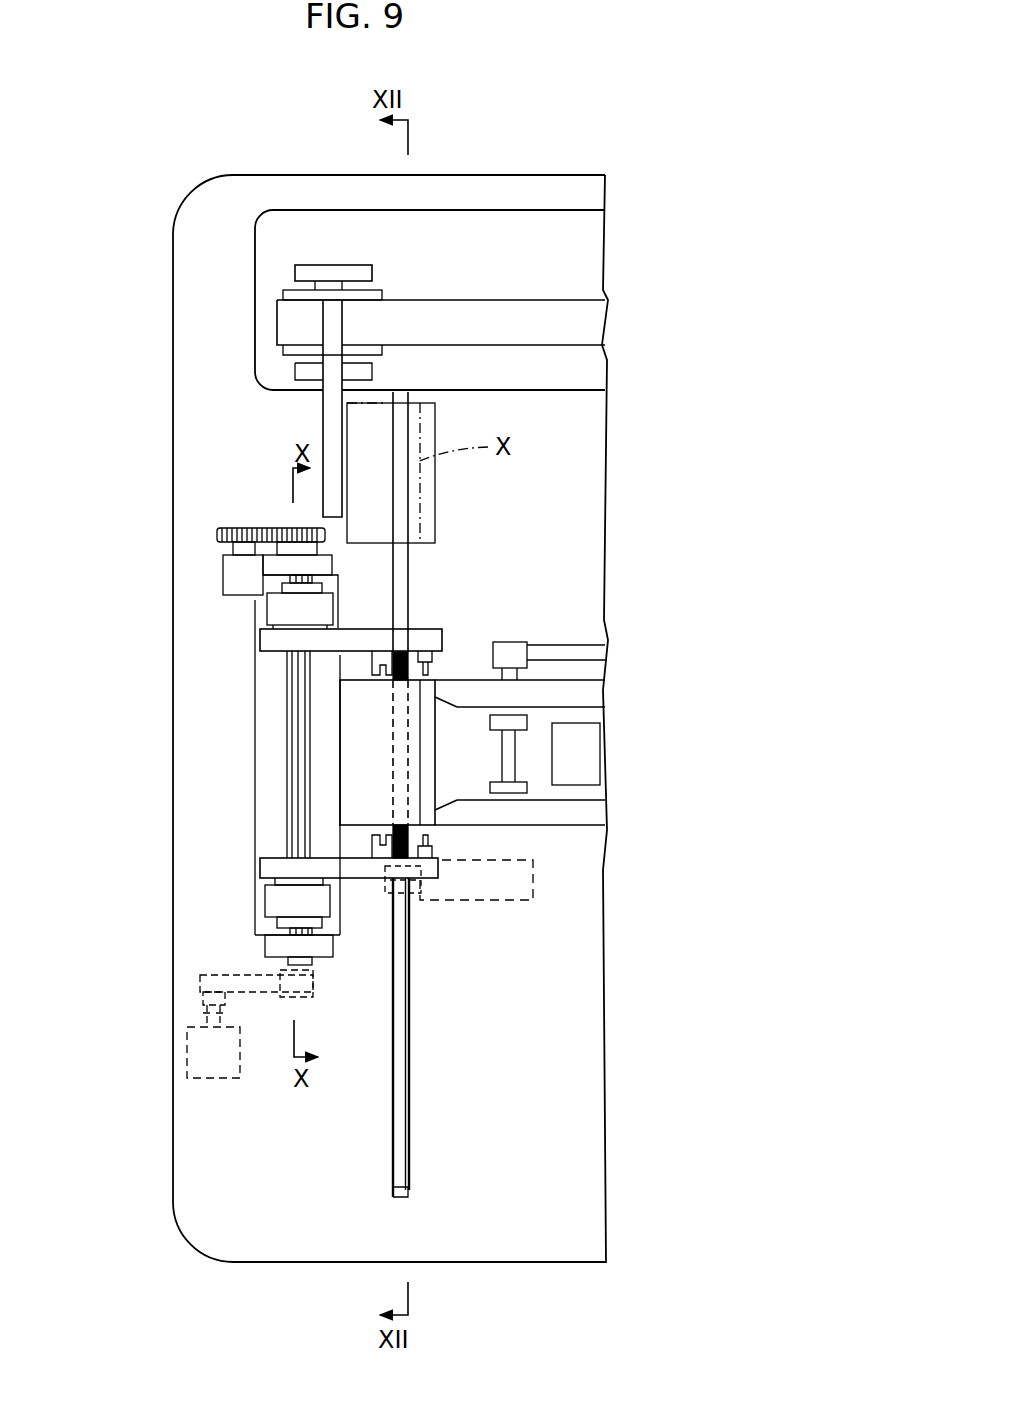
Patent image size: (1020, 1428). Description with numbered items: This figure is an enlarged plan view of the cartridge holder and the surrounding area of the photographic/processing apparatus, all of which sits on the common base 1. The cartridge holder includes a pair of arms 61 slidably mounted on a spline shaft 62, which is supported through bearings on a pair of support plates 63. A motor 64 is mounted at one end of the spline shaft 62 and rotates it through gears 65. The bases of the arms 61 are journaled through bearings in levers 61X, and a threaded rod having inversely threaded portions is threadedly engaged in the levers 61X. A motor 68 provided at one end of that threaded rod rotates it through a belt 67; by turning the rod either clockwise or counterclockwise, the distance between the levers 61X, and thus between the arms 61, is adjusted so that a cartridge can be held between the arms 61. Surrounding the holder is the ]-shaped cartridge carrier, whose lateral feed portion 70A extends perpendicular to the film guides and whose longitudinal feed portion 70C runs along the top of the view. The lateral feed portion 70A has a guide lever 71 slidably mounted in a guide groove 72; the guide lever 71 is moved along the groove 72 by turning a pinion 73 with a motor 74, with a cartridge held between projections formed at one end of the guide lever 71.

The common base 1 is at (187, 243).
The longitudinal feed portion 70C is at (483, 266).
The lateral feed portion 70A is at (436, 794).
The gears 65 is at (297, 533).
The motor 64 is at (227, 583).
The support plates 63 is at (272, 565).
The levers 61X is at (258, 610).
The arms 61 is at (253, 640).
The spline shaft 62 is at (298, 740).
The belt 67 is at (200, 985).
The motor 68 is at (187, 1075).
The guide lever 71 is at (402, 1002).
The guide groove 72 is at (400, 1127).
The pinion 73 is at (415, 903).
The motor 74 is at (505, 900).